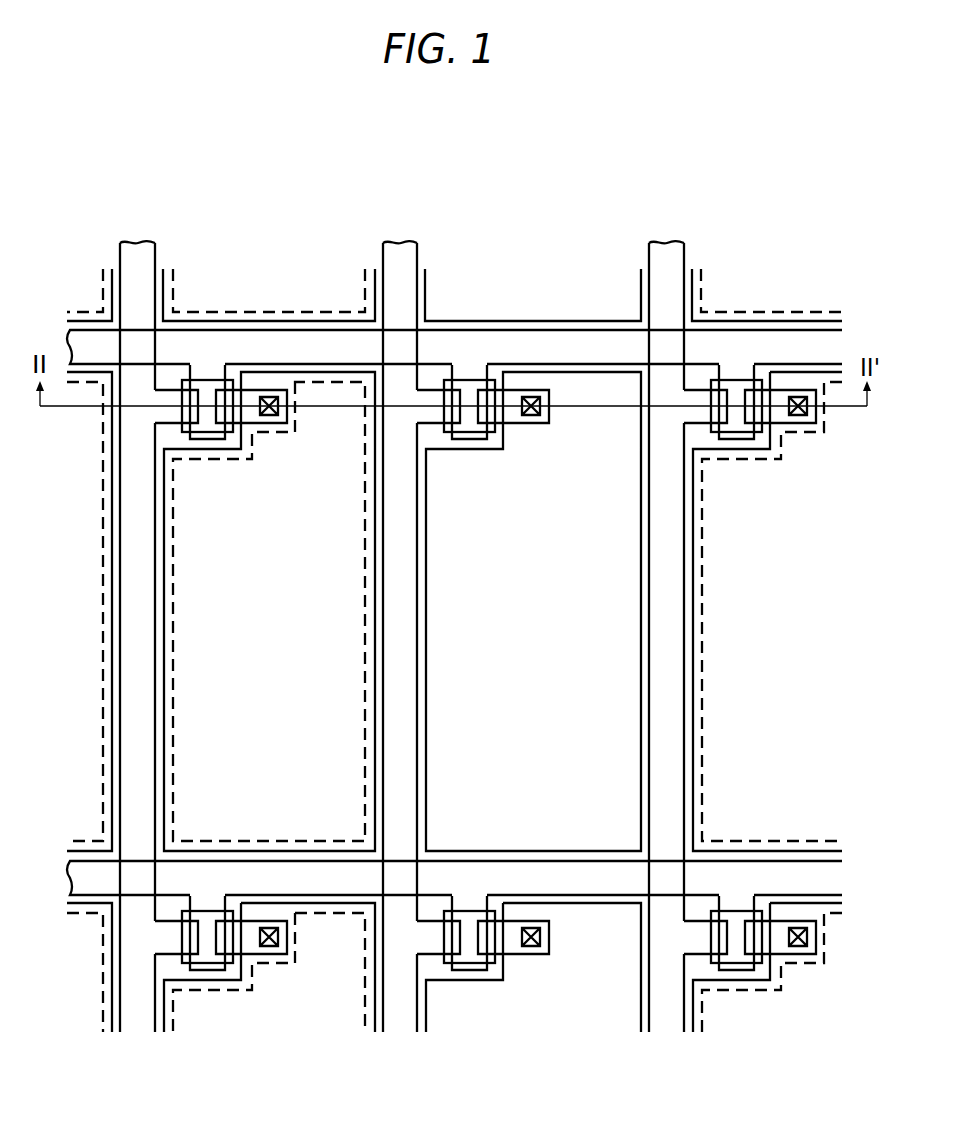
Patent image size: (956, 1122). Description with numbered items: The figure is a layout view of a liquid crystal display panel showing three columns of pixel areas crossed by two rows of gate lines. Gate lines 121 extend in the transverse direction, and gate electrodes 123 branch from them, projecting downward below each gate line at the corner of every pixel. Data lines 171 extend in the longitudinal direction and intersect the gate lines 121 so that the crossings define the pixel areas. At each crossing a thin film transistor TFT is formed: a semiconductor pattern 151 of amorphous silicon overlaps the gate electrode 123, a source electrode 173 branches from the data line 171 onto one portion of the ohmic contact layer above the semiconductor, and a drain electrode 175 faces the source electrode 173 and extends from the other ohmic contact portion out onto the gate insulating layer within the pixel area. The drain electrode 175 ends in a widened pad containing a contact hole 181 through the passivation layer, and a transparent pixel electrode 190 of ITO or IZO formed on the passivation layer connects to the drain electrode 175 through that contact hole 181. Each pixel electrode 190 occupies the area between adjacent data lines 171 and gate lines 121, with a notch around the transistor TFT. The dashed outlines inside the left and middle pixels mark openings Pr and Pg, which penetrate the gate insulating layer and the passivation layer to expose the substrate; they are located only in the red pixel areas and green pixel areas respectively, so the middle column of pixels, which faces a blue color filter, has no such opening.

The gate line 121 is at (233, 338).
The gate electrode 123 is at (217, 440).
The semiconductor pattern 151 is at (230, 432).
The data line 171 is at (157, 620).
The source electrode 173 is at (191, 425).
The drain electrode 175 is at (272, 424).
The contact hole 181 is at (279, 408).
The pixel electrode 190 is at (112, 543).
The opening in red pixel area Pr is at (103, 661).
The opening in green pixel area Pg is at (175, 731).
The thin film transistor TFT is at (289, 487).